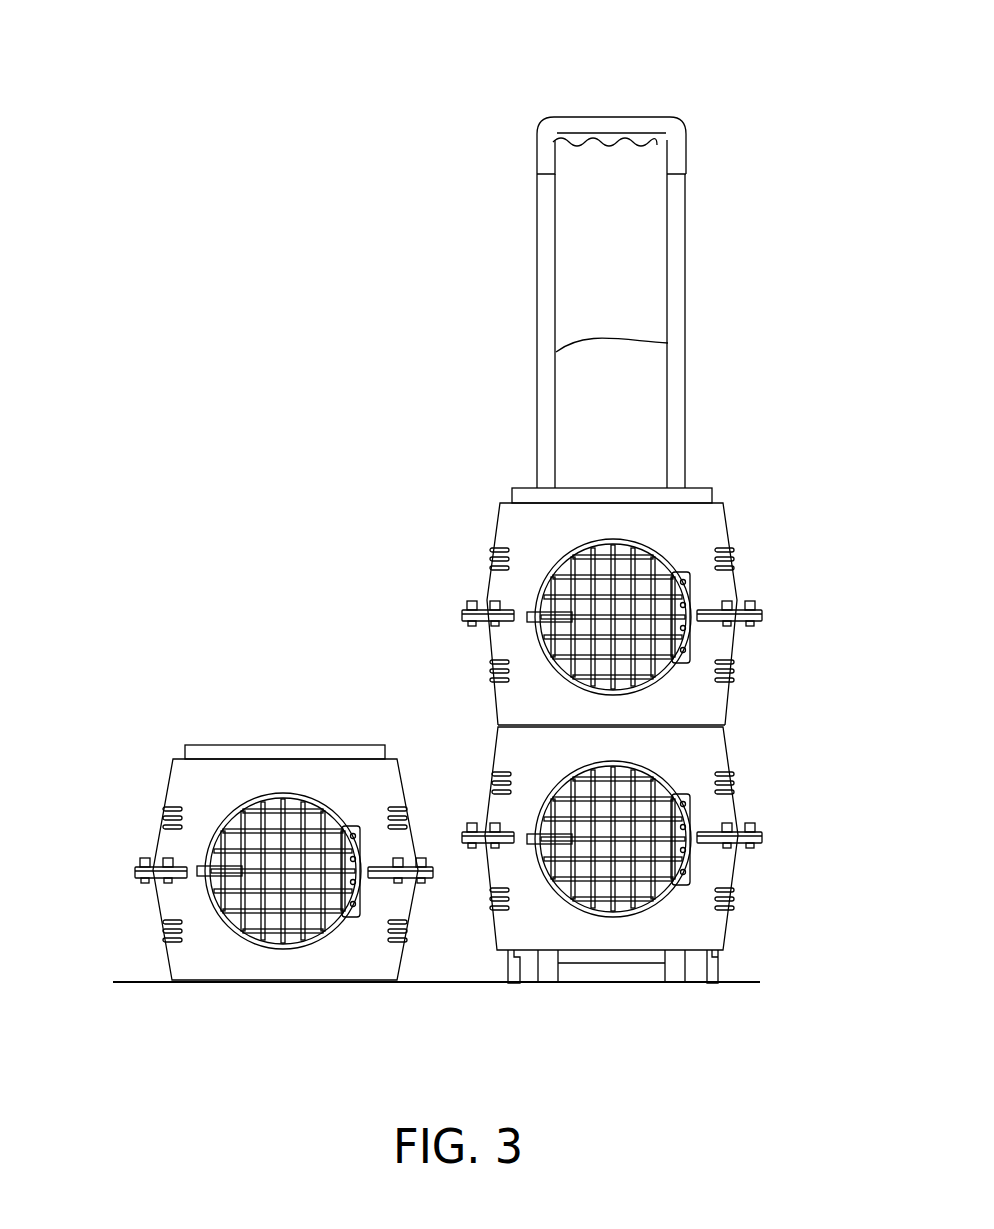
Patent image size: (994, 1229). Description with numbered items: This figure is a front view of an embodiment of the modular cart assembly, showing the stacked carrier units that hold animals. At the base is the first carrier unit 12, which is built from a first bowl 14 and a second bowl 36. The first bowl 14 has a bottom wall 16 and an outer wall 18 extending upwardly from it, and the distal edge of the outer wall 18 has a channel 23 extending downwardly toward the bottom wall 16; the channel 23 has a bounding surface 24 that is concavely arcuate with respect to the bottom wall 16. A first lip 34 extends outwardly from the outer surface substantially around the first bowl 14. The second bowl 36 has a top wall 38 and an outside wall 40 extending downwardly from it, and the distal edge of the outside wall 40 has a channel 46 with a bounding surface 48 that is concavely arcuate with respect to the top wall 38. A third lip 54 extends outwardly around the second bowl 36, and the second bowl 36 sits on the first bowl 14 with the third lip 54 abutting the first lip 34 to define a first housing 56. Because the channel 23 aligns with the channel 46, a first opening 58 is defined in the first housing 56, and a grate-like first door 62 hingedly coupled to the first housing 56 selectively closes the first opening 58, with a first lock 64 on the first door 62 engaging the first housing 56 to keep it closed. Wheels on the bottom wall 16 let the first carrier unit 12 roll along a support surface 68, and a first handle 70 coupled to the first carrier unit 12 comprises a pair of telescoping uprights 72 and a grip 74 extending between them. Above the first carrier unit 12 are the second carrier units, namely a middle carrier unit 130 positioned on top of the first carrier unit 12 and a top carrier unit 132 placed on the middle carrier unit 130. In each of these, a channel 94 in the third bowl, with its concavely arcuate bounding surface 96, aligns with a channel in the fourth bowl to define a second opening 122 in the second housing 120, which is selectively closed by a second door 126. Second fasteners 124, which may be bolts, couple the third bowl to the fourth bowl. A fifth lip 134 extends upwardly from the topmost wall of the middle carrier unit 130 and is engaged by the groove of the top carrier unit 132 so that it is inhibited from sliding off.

The first carrier unit 12 is at (795, 836).
The first bowl 14 is at (726, 928).
The bottom wall 16 is at (648, 955).
The outer wall 18 is at (727, 870).
The channel 23 is at (660, 897).
The bounding surface 24 is at (548, 830).
The first lip 34 is at (483, 847).
The second bowl 36 is at (740, 802).
The top wall 38 is at (532, 723).
The outside wall 40 is at (713, 760).
The channel 46 is at (567, 775).
The bounding surface 48 is at (573, 785).
The third lip 54 is at (480, 830).
The first housing 56 is at (780, 820).
The first opening 58 is at (626, 872).
The first door 62 is at (552, 895).
The first lock 64 is at (563, 845).
The support surface 68 is at (118, 982).
The first handle 70 is at (542, 254).
The uprights 72 is at (539, 373).
The grip 74 is at (597, 118).
The channel 94 is at (267, 950).
The bounding surface 96 is at (235, 923).
The second housing 120 is at (603, 729).
The second opening 122 is at (645, 583).
The second fasteners 124 is at (752, 600).
The second door 126 is at (572, 555).
The middle carrier unit 130 is at (718, 472).
The top carrier unit 132 is at (243, 877).
The fifth lip 134 is at (245, 745).